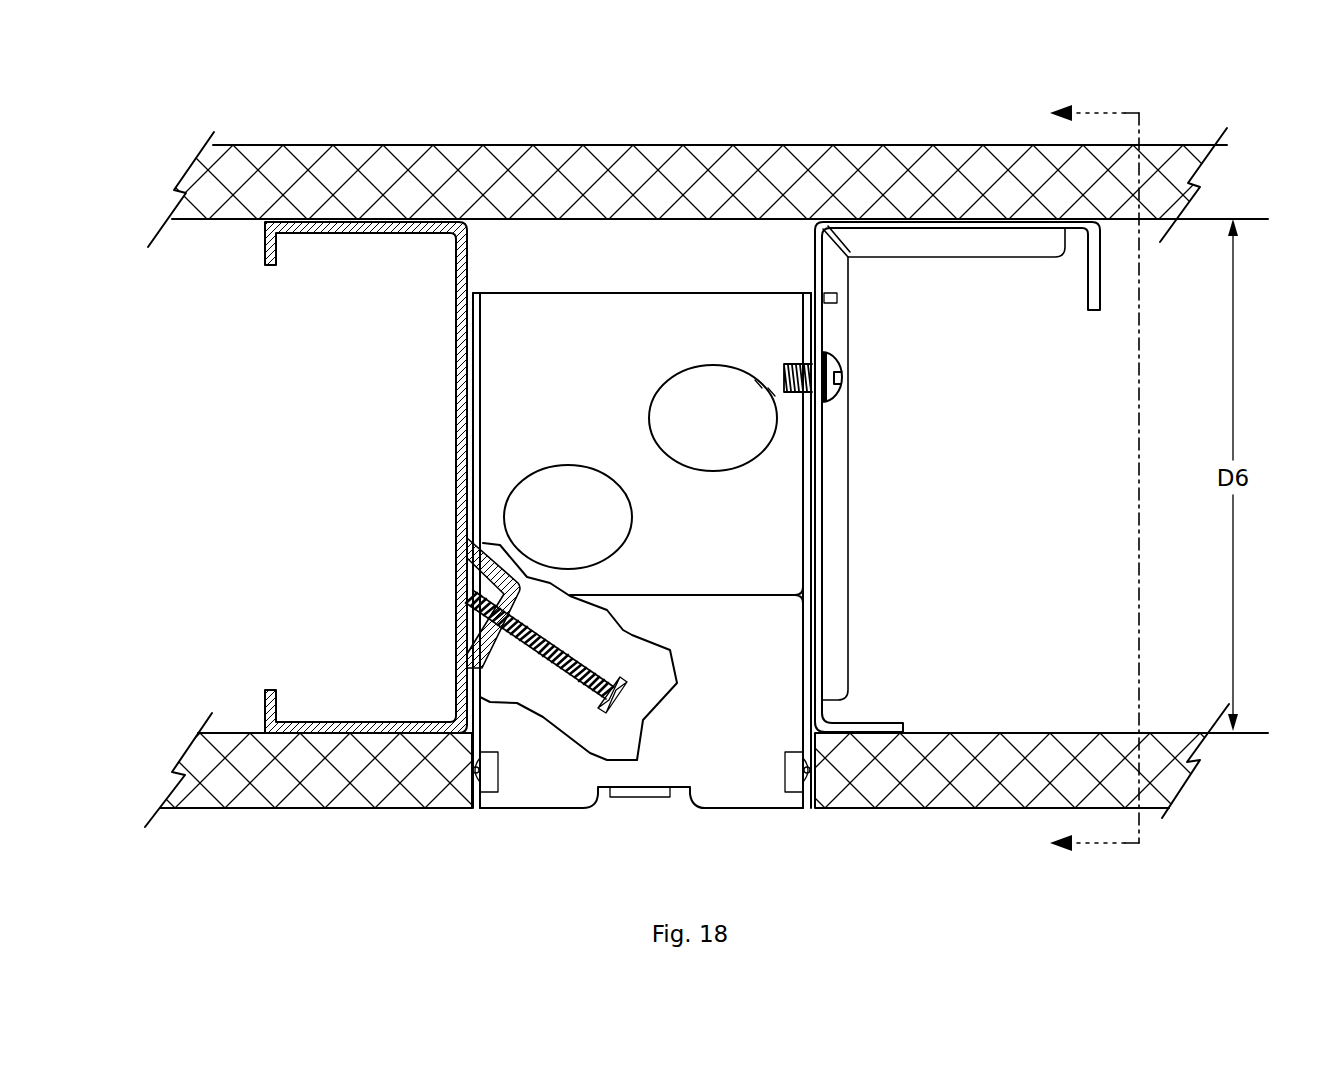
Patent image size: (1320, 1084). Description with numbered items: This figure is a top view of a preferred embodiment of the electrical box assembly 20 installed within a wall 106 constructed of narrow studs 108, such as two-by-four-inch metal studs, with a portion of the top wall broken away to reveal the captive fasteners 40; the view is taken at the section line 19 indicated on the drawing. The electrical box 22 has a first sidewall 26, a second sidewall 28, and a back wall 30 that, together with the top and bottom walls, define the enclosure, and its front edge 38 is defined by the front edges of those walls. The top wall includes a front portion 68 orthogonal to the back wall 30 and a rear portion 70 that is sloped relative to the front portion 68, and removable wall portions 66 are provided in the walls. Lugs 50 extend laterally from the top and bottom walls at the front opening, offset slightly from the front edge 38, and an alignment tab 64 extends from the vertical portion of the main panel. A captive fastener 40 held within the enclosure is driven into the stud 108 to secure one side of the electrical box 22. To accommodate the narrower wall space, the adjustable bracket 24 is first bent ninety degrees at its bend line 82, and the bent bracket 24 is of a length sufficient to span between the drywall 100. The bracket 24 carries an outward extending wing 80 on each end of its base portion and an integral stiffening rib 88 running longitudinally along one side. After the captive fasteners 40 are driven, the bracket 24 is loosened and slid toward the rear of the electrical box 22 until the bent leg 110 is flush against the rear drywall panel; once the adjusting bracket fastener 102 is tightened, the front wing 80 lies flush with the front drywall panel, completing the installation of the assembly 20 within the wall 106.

The section line 19- 19 is at (1094, 478).
The electrical box assembly 20 is at (1055, 420).
The electrical box 22 is at (737, 292).
The adjustable bracket 24 is at (818, 445).
The first sidewall 26 is at (480, 397).
The second sidewall 28 is at (806, 515).
The back wall 30 is at (570, 280).
The front edge 38 is at (732, 808).
The captive fastener 40 is at (585, 667).
The lugs 50 is at (640, 795).
The alignment tab 64 is at (838, 298).
The removable wall portions 66 is at (694, 426).
The front portion 68 is at (701, 654).
The rear portion 70 is at (591, 442).
The outward extending wing 80 is at (1088, 272).
The bend line 82 is at (818, 225).
The stiffening rib 88 is at (1008, 252).
The drywall 100 is at (243, 205).
The adjusting bracket fastener 102 is at (838, 357).
The wall 106 is at (857, 808).
The narrow studs 108 is at (463, 310).
The bent leg 110 is at (957, 225).